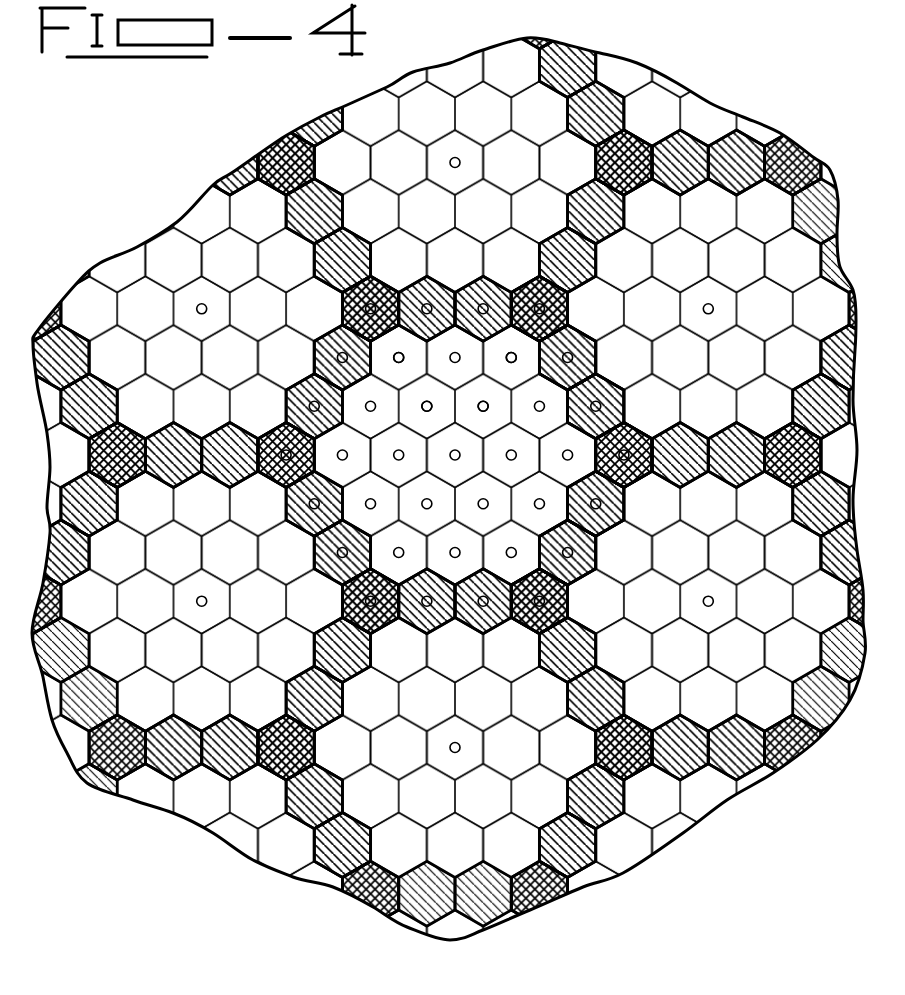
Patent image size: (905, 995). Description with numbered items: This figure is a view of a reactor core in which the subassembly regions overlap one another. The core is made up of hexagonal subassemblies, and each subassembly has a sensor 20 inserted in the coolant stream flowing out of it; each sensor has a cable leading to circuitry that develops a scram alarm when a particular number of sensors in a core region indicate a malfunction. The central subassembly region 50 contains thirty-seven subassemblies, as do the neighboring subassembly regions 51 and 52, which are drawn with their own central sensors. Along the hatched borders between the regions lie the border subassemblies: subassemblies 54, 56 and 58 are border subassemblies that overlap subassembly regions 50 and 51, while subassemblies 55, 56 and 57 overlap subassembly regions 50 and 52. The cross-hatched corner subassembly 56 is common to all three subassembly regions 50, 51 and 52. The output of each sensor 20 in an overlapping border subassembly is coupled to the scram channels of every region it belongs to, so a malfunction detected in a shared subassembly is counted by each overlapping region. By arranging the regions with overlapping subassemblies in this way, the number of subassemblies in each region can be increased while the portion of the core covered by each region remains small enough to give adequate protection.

The sensor 20 is at (482, 399).
The subassembly region 50 is at (465, 495).
The subassembly region 51 is at (730, 275).
The subassembly region 52 is at (690, 640).
The border subassembly 54 is at (607, 388).
The border subassembly 55 is at (583, 565).
The border subassembly 56 is at (632, 437).
The border subassembly 57 is at (524, 622).
The border subassembly 58 is at (523, 295).